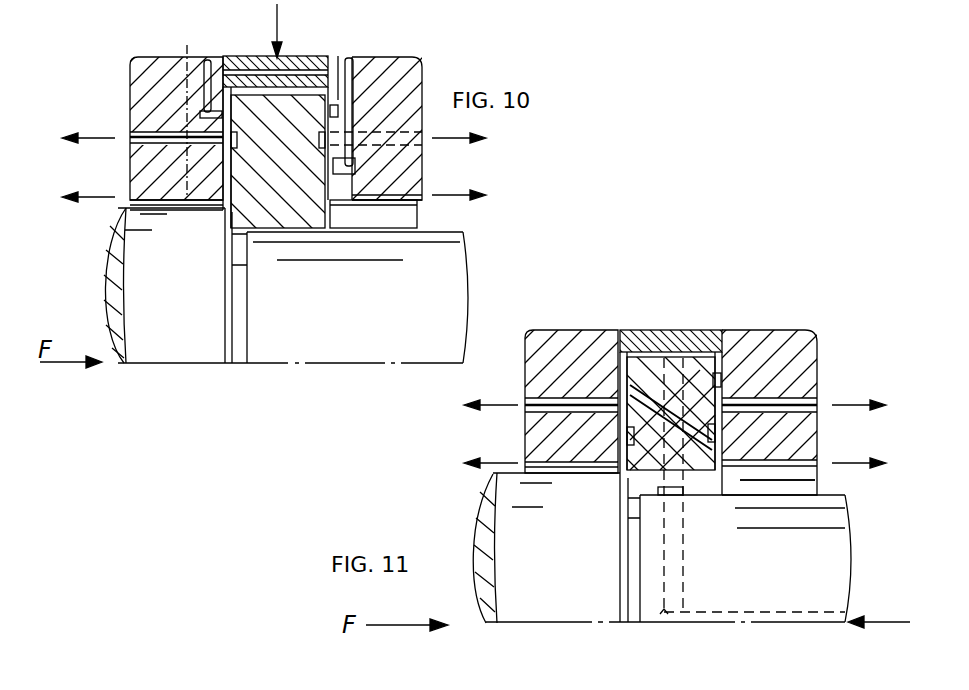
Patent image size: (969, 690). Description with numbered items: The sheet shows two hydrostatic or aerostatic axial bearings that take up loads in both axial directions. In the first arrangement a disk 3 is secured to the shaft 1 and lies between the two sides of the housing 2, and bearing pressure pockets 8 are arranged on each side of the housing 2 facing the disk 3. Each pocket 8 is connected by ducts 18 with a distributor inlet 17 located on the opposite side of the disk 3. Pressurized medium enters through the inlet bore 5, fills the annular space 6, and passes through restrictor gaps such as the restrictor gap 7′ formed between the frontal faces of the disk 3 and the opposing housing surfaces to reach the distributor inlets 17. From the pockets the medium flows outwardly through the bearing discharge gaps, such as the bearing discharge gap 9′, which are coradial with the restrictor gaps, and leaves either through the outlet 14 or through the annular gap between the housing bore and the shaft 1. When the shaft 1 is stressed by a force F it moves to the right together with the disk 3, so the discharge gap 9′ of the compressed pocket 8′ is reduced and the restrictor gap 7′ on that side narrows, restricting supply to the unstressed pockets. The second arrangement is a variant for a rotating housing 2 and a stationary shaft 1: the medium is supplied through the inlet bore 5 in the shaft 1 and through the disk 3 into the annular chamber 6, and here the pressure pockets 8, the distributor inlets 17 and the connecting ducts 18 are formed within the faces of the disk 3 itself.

In FIG. 10, the shaft 1 is at (447, 251).
In FIG. 11, the shaft 1 is at (513, 553).
In FIG. 10, the housing 2 is at (133, 58).
In FIG. 11, the housing 2 is at (585, 337).
In FIG. 10, the disk 3 is at (309, 108).
In FIG. 11, the disk 3 is at (625, 473).
In FIG. 10, the inlet bore 5 is at (282, 54).
In FIG. 11, the inlet bore 5 is at (676, 518).
In FIG. 10, the annular space 6 is at (260, 88).
In FIG. 11, the annular space 6 is at (630, 356).
In FIG. 10, the restrictor gap 7′ is at (349, 58).
In FIG. 11, the bearing pressure pocket 8 is at (617, 475).
In FIG. 10, the bearing pressure pocket 8′ is at (335, 179).
In FIG. 10, the bearing discharge gap 9′ is at (332, 151).
In FIG. 10, the outlet 14 is at (131, 124).
In FIG. 10, the distributor inlet 17 is at (209, 61).
In FIG. 11, the distributor inlet 17 is at (717, 366).
In FIG. 10, the duct 18 is at (188, 94).
In FIG. 11, the duct 18 is at (690, 398).